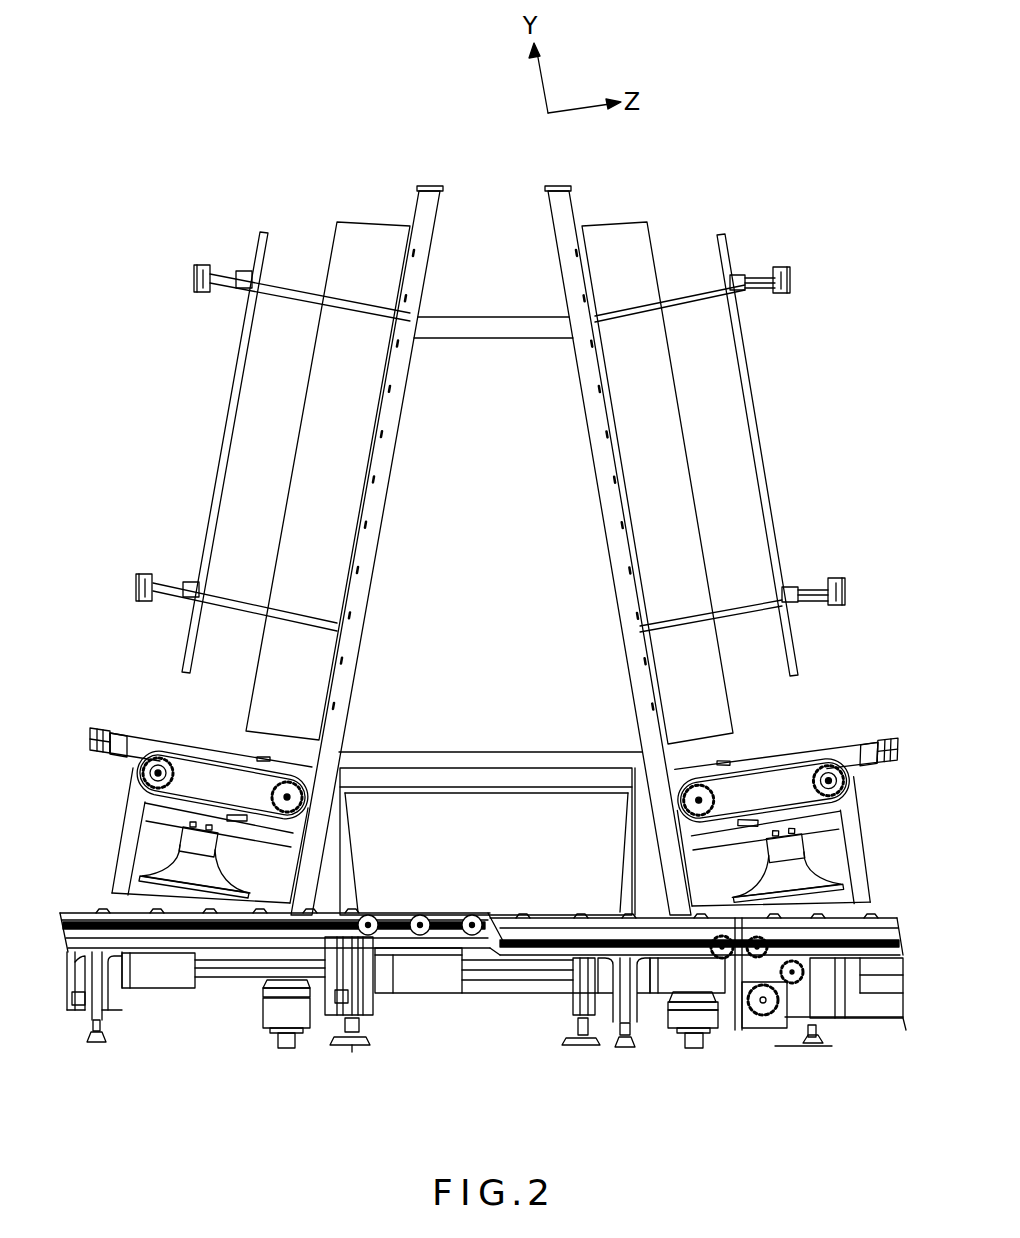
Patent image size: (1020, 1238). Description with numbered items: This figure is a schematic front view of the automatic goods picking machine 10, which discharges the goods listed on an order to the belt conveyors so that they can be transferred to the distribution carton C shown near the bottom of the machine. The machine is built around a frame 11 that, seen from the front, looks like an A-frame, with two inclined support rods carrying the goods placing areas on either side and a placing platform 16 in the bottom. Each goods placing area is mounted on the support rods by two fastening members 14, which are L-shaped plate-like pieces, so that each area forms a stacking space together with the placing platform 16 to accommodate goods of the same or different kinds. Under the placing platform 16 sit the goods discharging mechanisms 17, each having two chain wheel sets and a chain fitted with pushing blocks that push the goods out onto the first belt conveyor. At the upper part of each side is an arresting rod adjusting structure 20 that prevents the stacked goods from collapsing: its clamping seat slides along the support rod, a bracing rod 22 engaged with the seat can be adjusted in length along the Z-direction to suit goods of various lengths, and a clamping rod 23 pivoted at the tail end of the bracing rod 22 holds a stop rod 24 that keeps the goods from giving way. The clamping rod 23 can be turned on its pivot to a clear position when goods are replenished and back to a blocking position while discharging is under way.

The automatic goods picking machine 10 is at (530, 423).
The frame 11 is at (414, 282).
The fastening member 14 is at (368, 238).
The placing platform 16 is at (142, 747).
The goods discharging mechanism 17 is at (148, 797).
The arresting rod adjusting structure 20 is at (488, 399).
The bracing rod 22 is at (302, 297).
The clamping rod 23 is at (227, 273).
The stop rod 24 is at (260, 243).
The distribution carton C is at (573, 813).